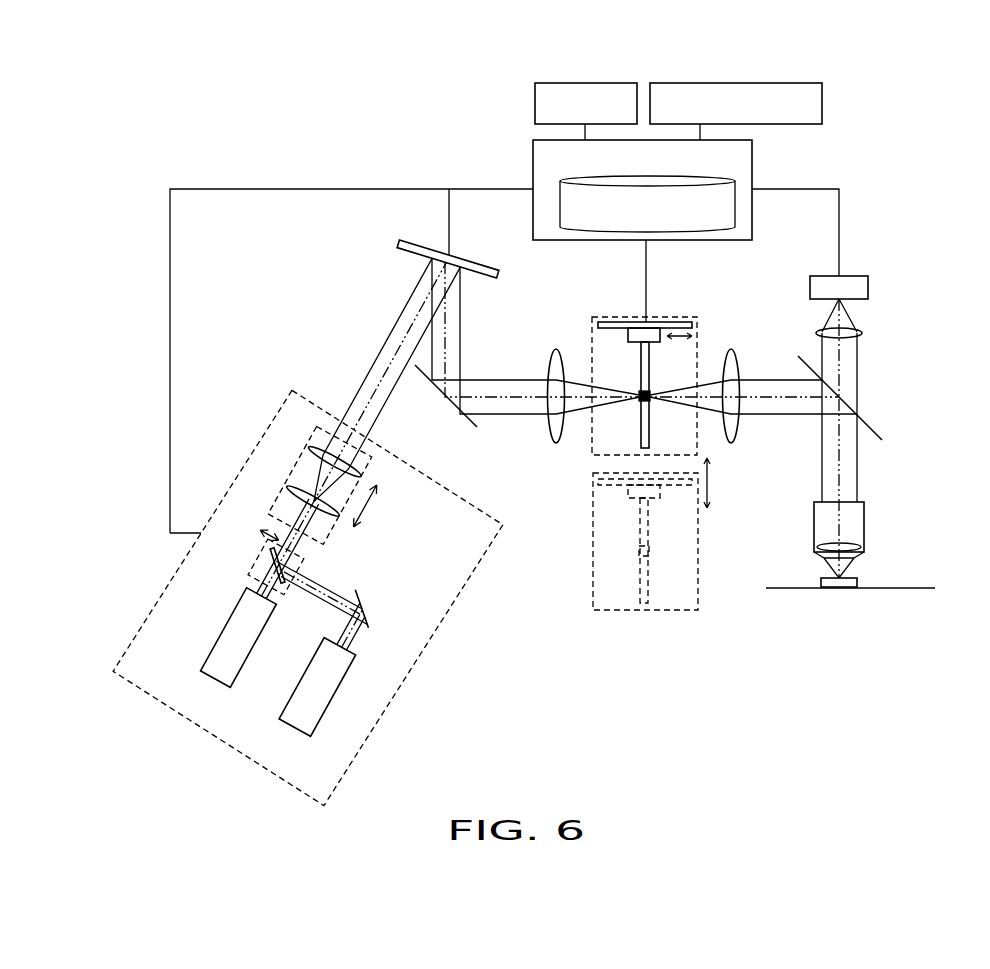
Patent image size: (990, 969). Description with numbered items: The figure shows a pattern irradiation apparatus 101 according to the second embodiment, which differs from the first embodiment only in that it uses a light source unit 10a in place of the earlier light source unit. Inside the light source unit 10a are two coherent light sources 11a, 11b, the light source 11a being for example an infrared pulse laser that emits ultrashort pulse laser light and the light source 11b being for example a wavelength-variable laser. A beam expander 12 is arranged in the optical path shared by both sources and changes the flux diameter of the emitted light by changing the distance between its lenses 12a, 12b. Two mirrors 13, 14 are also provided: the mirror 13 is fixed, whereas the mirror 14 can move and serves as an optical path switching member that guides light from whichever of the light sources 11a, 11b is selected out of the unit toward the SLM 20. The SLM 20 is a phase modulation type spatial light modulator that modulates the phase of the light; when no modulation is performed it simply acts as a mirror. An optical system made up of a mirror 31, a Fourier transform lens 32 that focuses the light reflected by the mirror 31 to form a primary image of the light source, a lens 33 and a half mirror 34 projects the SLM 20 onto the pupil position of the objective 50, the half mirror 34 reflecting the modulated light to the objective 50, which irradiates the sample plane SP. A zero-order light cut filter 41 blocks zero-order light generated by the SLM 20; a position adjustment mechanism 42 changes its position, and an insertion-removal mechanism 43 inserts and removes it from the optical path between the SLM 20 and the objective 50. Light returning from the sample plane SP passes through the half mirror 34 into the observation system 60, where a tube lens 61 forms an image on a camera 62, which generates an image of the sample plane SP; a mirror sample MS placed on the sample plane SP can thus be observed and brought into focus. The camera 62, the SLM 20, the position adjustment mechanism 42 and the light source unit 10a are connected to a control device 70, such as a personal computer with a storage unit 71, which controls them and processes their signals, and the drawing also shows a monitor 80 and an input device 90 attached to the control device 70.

The pattern irradiation apparatus 101 is at (935, 60).
The monitor 80 is at (587, 83).
The input device 90 is at (716, 83).
The control device 70 is at (645, 183).
The storage unit 71 is at (727, 177).
The SLM 20 is at (400, 248).
The mirror 31 is at (443, 400).
The Fourier transform lens 32 is at (556, 349).
The lens 33 is at (733, 349).
The half mirror 34 is at (877, 425).
The 0-order light cut filter 41 is at (641, 431).
The position adjustment mechanism 42 is at (634, 381).
The insertion-removal mechanism 43 is at (707, 475).
The objective 50 is at (864, 527).
The observation system 60 is at (893, 302).
The tube lens 61 is at (870, 320).
The camera 62 is at (868, 288).
The mirror sample MS is at (857, 583).
The sample plane SP is at (875, 589).
The light source unit 10a is at (326, 529).
The light source 11a is at (240, 665).
The light source 11b is at (330, 698).
The beam expander 12 is at (291, 499).
The lens 12a is at (307, 448).
The lens 12b is at (287, 485).
The mirror 13 is at (363, 613).
The mirror 14 is at (252, 575).